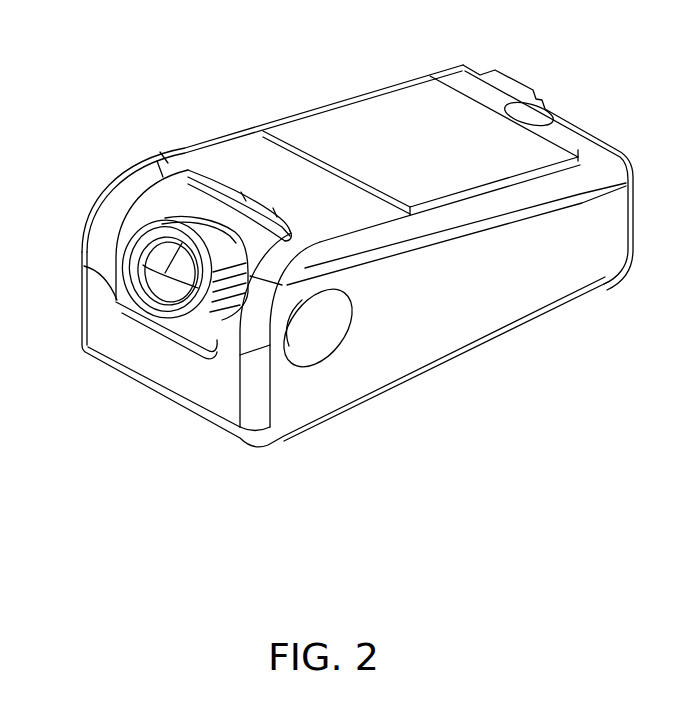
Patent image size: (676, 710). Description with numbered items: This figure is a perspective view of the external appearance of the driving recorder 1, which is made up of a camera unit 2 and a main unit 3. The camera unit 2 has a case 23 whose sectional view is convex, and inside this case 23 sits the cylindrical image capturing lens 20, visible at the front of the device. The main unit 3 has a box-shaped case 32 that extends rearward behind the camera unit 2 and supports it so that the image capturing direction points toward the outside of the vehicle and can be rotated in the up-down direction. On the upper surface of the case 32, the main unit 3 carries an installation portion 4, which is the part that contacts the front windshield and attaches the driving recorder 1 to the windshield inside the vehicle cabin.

The driving recorder 1 is at (129, 106).
The camera unit 2 is at (126, 243).
The main unit 3 is at (256, 147).
The installation portion 4 is at (380, 122).
The image capturing lens 20 is at (165, 293).
The case 23 is at (138, 212).
The case 32 is at (280, 166).